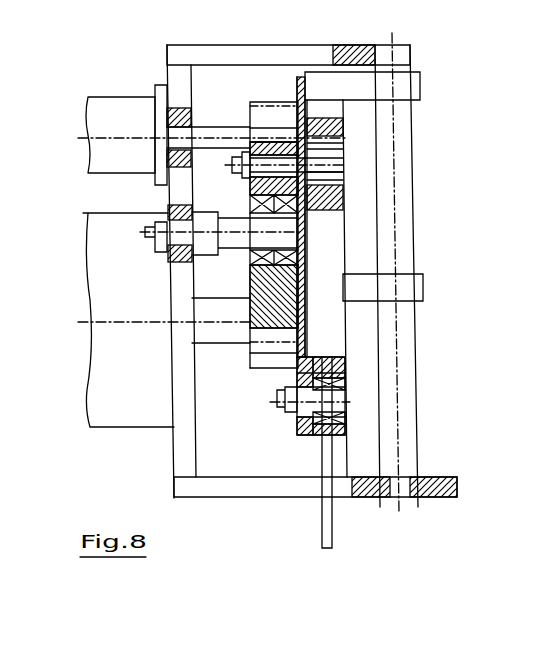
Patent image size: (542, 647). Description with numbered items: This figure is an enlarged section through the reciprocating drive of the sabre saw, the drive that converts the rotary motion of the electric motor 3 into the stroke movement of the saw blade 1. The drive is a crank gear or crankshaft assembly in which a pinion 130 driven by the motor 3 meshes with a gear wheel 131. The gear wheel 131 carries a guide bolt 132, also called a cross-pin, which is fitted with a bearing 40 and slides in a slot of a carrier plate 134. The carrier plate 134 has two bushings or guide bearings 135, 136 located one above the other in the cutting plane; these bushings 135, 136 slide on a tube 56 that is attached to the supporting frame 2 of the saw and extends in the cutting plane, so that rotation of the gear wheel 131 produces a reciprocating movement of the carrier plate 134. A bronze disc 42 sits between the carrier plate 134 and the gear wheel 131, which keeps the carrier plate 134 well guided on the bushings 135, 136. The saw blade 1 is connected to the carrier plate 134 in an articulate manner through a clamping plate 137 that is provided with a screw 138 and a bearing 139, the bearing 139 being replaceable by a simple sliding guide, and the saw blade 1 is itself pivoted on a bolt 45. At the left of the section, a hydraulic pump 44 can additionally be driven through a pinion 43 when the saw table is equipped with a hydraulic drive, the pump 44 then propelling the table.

The saw blade 1 is at (325, 520).
The supporting frame 2 is at (415, 116).
The electric motor 3 is at (130, 412).
The bearing 40 is at (338, 147).
The bronze disc 42 is at (295, 127).
The pinion 43 is at (260, 120).
The hydraulic pump 44 is at (122, 113).
The bolt 45 is at (340, 407).
The tube 56 is at (423, 360).
The pinion 130 is at (268, 360).
The gear wheel 131 is at (270, 285).
The guide bolt 132 is at (338, 172).
The carrier plate 134 is at (323, 257).
The bushing 135 is at (403, 290).
The bushing 136 is at (402, 88).
The clamping plate 137 is at (303, 437).
The screw 138 is at (283, 413).
The bearing 139 is at (327, 430).